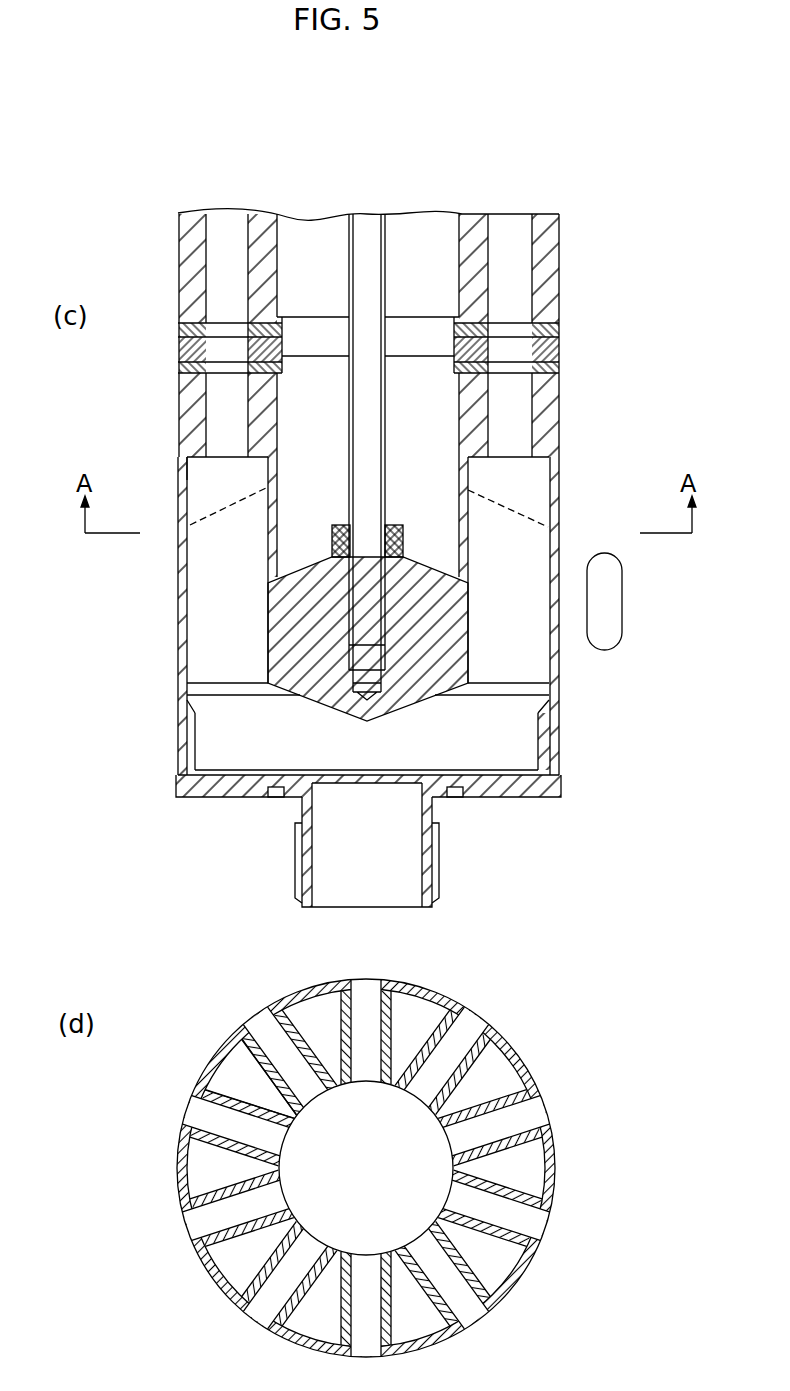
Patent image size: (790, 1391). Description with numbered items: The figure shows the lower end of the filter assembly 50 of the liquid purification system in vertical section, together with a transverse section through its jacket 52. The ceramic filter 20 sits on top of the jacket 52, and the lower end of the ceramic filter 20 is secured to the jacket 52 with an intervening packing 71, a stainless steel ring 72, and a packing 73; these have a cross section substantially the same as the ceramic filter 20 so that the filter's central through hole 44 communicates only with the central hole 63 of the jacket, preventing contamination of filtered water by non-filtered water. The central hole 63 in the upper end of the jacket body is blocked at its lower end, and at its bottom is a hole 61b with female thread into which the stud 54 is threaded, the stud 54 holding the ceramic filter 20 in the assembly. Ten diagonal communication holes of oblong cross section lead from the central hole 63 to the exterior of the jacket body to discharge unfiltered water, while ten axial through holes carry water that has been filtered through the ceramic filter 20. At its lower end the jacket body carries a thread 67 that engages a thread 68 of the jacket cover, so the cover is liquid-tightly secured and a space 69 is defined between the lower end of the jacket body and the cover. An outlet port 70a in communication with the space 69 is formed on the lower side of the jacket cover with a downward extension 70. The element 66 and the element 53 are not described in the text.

The central through hole 44 is at (427, 232).
The filter assembly 50 is at (610, 240).
The ceramic filter 20 is at (556, 277).
The packing 71 is at (560, 333).
The stainless steel ring 72 is at (560, 353).
The packing 73 is at (560, 372).
The central hole 63 is at (292, 417).
The stud 54 is at (378, 422).
The jacket 52 is at (596, 494).
The hole with female thread 61b is at (405, 558).
The thread 67 is at (177, 722).
The thread 68 is at (198, 745).
The piston 66 is at (393, 700).
The space 69 is at (530, 740).
The thread 53 is at (294, 870).
The downward extension 70 is at (442, 857).
The outlet port 70a is at (388, 902).